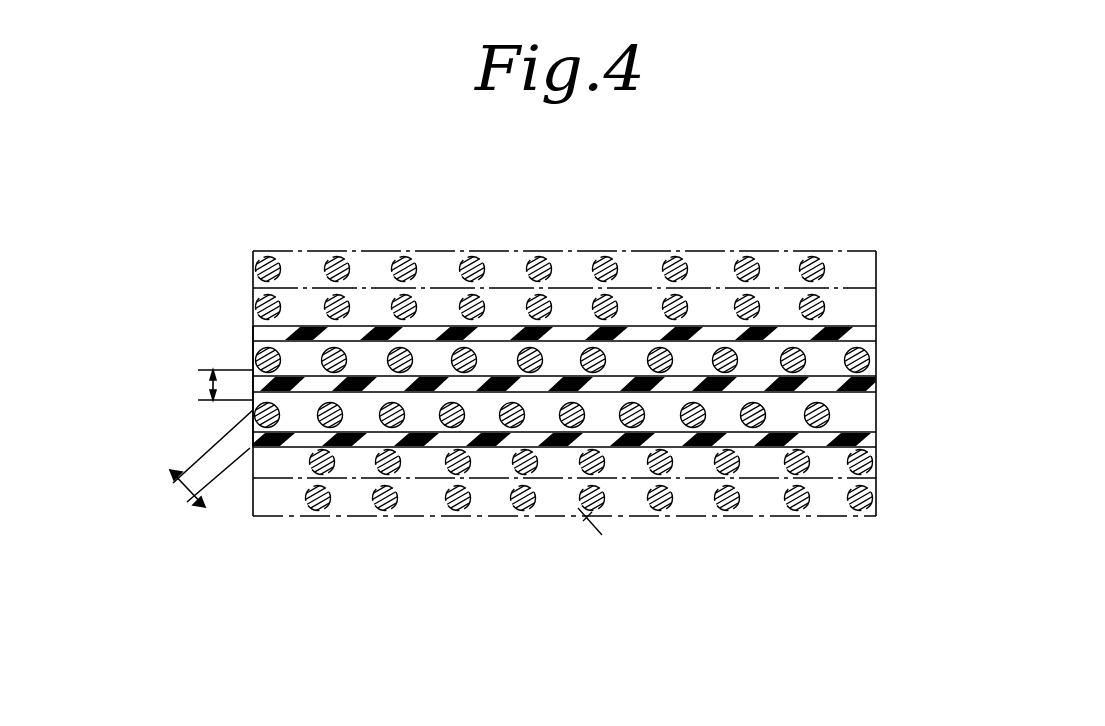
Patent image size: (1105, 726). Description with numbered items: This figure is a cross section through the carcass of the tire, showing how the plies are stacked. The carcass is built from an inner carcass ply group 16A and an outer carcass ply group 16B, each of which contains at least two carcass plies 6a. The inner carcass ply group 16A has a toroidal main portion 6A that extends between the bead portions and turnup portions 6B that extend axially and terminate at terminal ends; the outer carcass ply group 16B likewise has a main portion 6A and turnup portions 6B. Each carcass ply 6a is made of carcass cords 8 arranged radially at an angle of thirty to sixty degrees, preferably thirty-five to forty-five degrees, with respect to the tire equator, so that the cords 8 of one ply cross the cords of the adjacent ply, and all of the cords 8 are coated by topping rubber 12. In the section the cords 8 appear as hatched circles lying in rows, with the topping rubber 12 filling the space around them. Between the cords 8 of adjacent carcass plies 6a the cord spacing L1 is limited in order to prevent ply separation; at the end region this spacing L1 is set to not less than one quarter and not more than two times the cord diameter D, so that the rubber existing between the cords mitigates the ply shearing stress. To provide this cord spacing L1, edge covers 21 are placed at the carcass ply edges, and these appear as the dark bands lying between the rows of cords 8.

The toroidal main portion 6A is at (867, 276).
The carcass ply 6a is at (867, 355).
The carcass cord 8 is at (399, 262).
The edge cover 21 is at (458, 393).
The topping rubber 12 is at (788, 415).
The inner carcass ply group 16A is at (1026, 372).
The outer carcass ply group 16B is at (968, 258).
The turnup portion 6B is at (968, 352).
The cord spacing L1 is at (213, 385).
The carcass cord diameter D is at (183, 492).